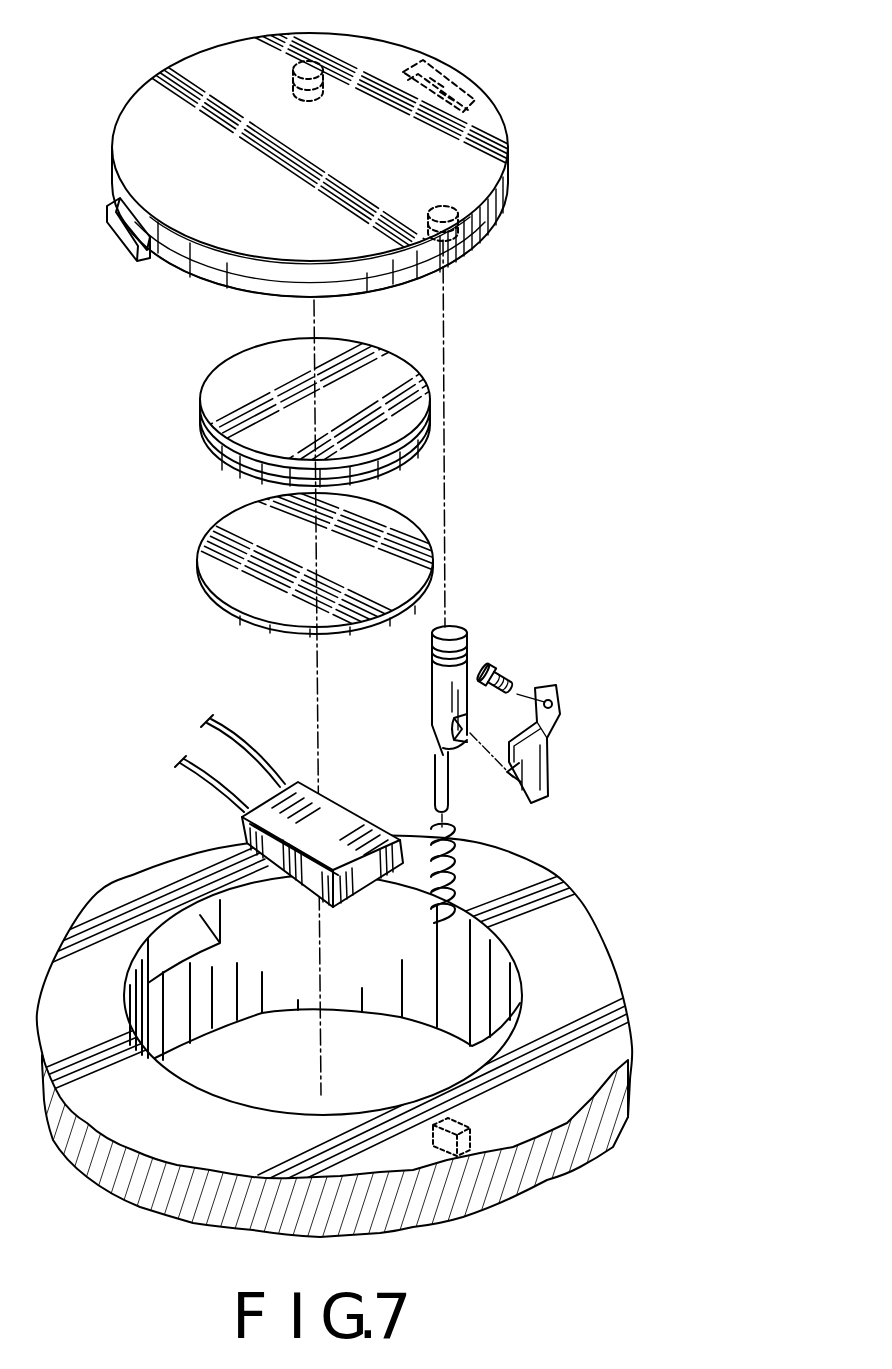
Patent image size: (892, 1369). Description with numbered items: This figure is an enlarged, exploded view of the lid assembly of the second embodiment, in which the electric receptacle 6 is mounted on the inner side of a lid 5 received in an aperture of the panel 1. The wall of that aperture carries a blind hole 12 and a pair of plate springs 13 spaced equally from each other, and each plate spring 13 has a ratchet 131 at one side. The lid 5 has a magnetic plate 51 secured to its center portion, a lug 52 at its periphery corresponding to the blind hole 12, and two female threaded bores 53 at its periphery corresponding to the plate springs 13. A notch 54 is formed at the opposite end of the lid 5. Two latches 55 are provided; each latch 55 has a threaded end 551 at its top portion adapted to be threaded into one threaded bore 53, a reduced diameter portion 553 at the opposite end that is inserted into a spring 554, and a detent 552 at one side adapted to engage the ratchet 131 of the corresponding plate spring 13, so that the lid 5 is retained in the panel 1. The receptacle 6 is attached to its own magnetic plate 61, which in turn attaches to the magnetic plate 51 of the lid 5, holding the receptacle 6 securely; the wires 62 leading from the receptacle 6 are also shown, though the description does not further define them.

The panel 1 is at (568, 934).
The blind hole 12 is at (163, 947).
The plate spring 13 is at (547, 751).
The ratchet 131 is at (510, 771).
The lid 5 is at (132, 122).
The magnetic plate 51 is at (213, 393).
The lug 52 is at (107, 221).
The female threaded bore 53 is at (316, 63).
The notch 54 is at (455, 70).
The latch 55 is at (432, 686).
The threaded end 551 is at (458, 630).
The detent 552 is at (452, 729).
The reduced diameter portion 553 is at (437, 783).
The spring 554 is at (433, 845).
The receptacle 6 is at (242, 826).
The magnetic plate 61 is at (207, 555).
The wires 62 is at (253, 752).